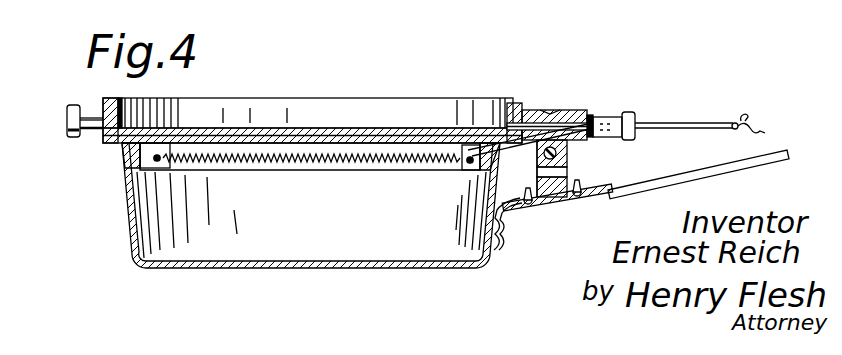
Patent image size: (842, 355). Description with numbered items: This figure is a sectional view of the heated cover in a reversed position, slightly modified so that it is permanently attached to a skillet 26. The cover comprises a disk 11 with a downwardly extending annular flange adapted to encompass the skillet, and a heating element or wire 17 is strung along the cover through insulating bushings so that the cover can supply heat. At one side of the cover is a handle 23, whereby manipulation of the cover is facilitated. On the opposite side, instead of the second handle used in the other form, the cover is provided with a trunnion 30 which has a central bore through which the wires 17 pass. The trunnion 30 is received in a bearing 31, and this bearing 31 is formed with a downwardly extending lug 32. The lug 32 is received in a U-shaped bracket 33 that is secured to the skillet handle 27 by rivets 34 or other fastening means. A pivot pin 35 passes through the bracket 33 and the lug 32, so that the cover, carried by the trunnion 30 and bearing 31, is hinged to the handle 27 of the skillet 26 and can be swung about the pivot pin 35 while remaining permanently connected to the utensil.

The disk 11 is at (364, 128).
The heating element or wire 17 is at (374, 167).
The handle 23 is at (80, 105).
The skillet 26 is at (129, 228).
The skillet handle 27 is at (700, 170).
The trunnion 30 is at (562, 110).
The bearing 31 is at (546, 110).
The lug 32 is at (568, 158).
The U-shaped bracket 33 is at (558, 201).
The rivets 34 is at (582, 196).
The pivot pin 35 is at (537, 167).